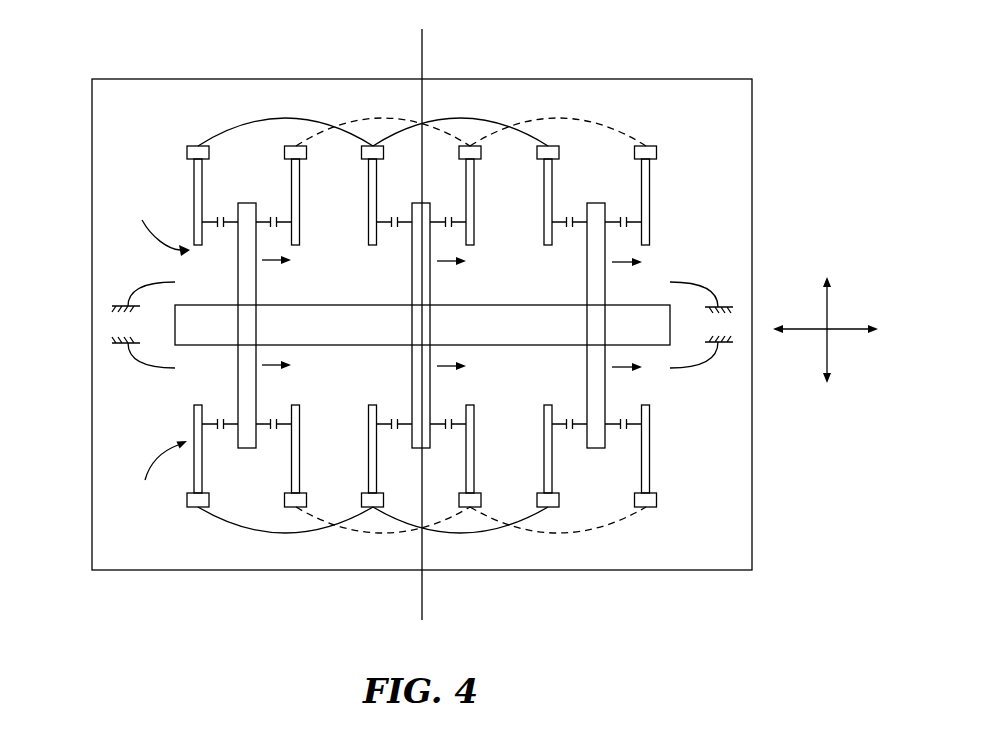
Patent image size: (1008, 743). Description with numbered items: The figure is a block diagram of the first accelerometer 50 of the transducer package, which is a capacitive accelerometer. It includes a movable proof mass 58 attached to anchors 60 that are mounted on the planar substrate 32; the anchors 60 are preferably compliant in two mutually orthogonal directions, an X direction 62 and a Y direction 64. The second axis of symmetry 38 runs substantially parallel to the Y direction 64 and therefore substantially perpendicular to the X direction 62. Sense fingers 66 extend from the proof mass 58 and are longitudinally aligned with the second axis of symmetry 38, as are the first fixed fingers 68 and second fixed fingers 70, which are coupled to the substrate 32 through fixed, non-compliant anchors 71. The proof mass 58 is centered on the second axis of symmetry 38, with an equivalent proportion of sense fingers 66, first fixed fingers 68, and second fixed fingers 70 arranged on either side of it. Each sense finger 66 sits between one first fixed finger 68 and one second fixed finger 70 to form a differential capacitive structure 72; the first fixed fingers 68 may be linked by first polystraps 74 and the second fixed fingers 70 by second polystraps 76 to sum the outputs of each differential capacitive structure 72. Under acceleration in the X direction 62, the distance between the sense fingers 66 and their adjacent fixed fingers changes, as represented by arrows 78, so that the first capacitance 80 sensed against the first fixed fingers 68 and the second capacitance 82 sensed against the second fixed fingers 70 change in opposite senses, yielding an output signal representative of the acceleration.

The planar substrate 32 is at (733, 90).
The second axis of symmetry 38 is at (422, 48).
The first accelerometer 50 is at (723, 669).
The movable proof mass 58 is at (422, 325).
The anchors 60 is at (128, 350).
The X direction 62 is at (808, 329).
The Y direction 64 is at (827, 302).
The sense fingers 66 is at (247, 272).
The first fixed fingers 68 is at (194, 170).
The second fixed fingers 70 is at (300, 185).
The fixed, non-compliant anchors 71 is at (284, 146).
The differential capacitive structure 72 is at (154, 355).
The first polystraps 74 is at (238, 121).
The second polystraps 76 is at (579, 118).
The arrows 78 is at (263, 263).
The first capacitance 80 is at (208, 257).
The second capacitance 82 is at (607, 197).